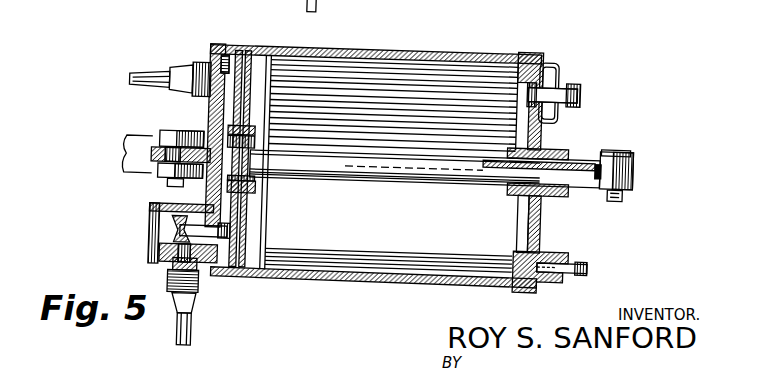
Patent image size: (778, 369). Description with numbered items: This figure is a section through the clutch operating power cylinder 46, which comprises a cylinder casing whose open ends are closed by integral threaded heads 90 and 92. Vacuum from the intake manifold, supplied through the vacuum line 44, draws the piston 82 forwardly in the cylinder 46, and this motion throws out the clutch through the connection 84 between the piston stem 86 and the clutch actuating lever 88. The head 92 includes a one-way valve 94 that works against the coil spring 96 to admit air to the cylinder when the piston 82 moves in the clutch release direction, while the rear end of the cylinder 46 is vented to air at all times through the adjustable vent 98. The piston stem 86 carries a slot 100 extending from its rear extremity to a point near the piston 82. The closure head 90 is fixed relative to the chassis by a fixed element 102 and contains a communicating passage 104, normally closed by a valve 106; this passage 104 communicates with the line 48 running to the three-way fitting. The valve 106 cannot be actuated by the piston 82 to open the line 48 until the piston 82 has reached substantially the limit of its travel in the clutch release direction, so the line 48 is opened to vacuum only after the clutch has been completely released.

The vacuum line 44 is at (150, 79).
The clutch operating power cylinder 46 is at (359, 51).
The line 48 is at (183, 336).
The piston 82 is at (244, 209).
The connection 84 is at (632, 162).
The piston stem 86 is at (382, 165).
The clutch actuating lever 88 is at (631, 182).
The closure head 90 is at (206, 48).
The threaded head 92 is at (542, 58).
The one-way valve 94 is at (514, 84).
The coil spring 96 is at (559, 77).
The adjustable vent 98 is at (543, 252).
The slot 100 is at (487, 159).
The fixed element 102 is at (133, 158).
The communicating passage 104 is at (200, 253).
The valve 106 is at (194, 218).